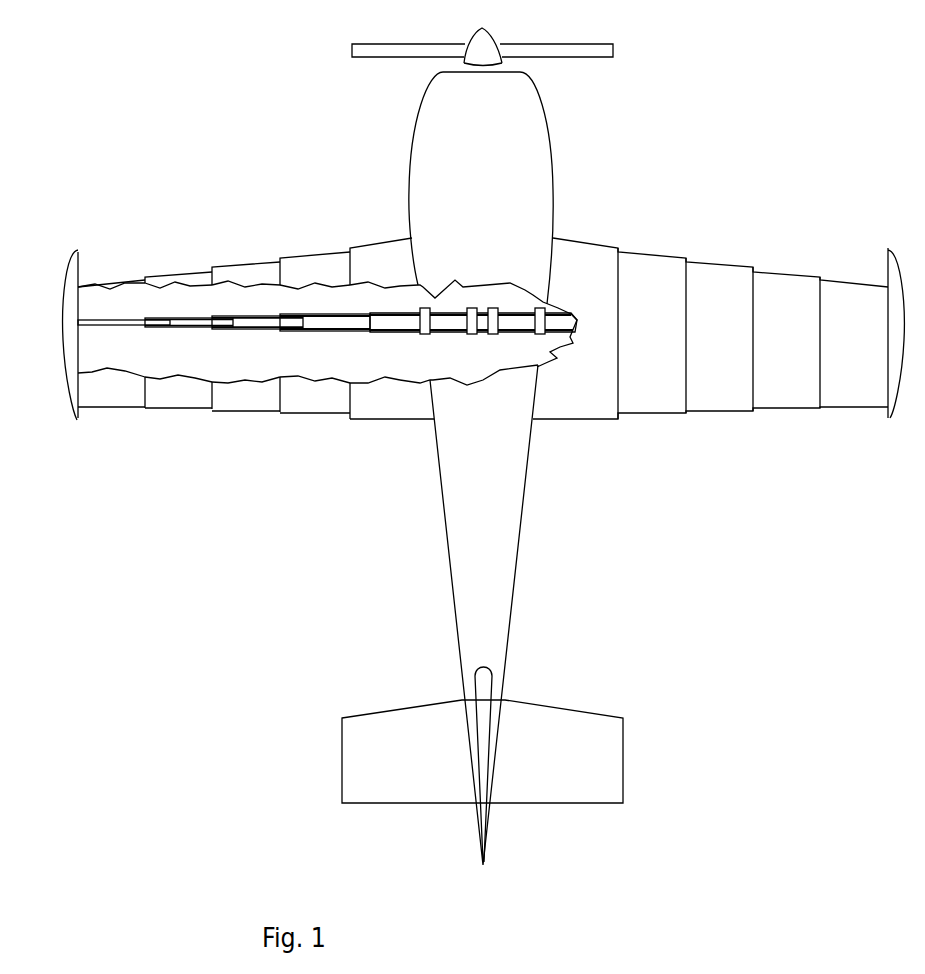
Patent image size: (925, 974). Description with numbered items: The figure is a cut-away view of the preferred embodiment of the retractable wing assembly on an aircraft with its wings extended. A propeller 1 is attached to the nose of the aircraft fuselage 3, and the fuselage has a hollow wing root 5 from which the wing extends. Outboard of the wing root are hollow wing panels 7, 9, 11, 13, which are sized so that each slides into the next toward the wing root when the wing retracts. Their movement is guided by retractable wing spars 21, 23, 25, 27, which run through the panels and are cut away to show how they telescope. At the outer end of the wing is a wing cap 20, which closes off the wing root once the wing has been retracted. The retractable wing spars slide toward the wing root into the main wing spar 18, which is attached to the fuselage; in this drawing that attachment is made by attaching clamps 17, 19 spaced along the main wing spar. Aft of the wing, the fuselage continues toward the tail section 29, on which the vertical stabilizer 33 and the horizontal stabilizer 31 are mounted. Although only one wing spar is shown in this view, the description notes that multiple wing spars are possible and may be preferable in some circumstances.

The propeller 1 is at (562, 40).
The aircraft fuselage 3 is at (558, 177).
The hollow wing root 5 is at (390, 237).
The hollow wing panel 7 is at (310, 248).
The hollow wing panel 9 is at (258, 254).
The hollow wing panel 11 is at (195, 267).
The hollow wing panel 13 is at (128, 275).
The attaching clamp 17 is at (428, 334).
The main wing spar 18 is at (390, 333).
The attaching clamp 19 is at (492, 308).
The wing cap 20 is at (52, 313).
The retractable wing spar 21 is at (317, 316).
The retractable wing spar 23 is at (262, 318).
The retractable wing spar 25 is at (195, 320).
The retractable wing spar 27 is at (128, 320).
The tail section 29 is at (513, 618).
The horizontal stabilizer 31 is at (368, 713).
The vertical stabilizer 33 is at (489, 830).